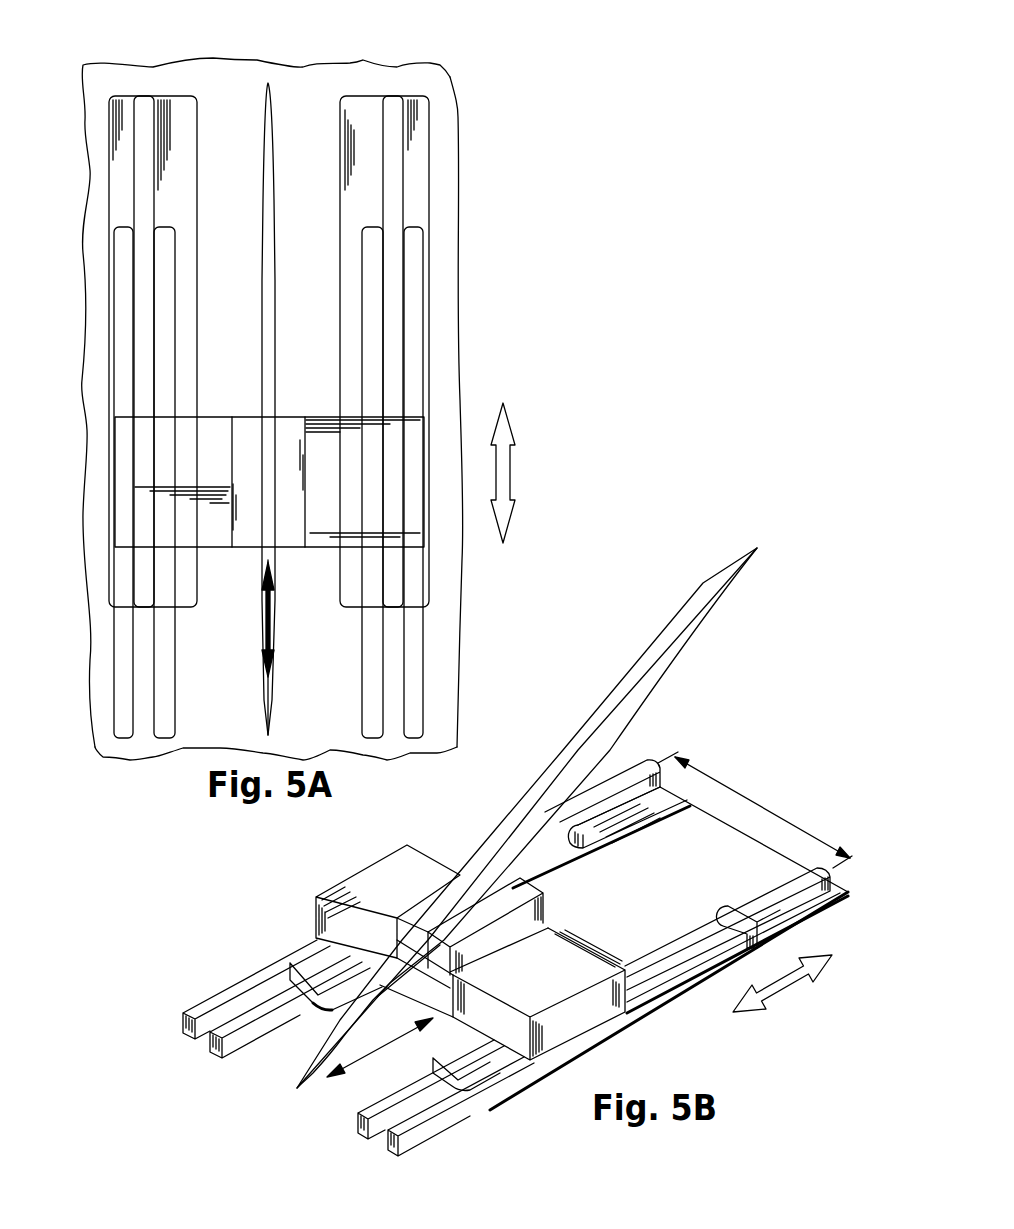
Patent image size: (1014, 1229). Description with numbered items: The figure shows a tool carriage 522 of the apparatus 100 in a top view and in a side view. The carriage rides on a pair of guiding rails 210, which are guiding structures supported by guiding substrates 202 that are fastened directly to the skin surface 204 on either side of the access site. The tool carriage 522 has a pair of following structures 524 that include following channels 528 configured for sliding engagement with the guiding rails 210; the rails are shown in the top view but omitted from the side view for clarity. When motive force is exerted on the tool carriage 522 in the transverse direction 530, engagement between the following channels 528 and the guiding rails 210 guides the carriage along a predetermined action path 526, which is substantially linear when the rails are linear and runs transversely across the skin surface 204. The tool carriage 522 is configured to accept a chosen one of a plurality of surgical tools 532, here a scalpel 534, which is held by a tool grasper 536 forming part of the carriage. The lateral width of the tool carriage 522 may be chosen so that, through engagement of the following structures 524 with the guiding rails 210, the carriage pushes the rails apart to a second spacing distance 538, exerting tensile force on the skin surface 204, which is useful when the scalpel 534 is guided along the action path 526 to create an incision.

In FIG. 5A, the apparatus 100 is at (500, 76).
In FIG. 5B, the apparatus 100 is at (790, 548).
In FIG. 5A, the guiding substrate 202 is at (123, 208).
In FIG. 5B, the guiding substrate 202 is at (535, 939).
In FIG. 5A, the skin surface 204 is at (442, 383).
In FIG. 5A, the guiding rail 210 is at (145, 188).
In FIG. 5A, the tool carriage 522 is at (475, 134).
In FIG. 5B, the tool carriage 522 is at (700, 1035).
In FIG. 5A, the following structure 524 is at (430, 697).
In FIG. 5B, the following structure 524 is at (470, 1125).
In FIG. 5A, the action path 526 is at (270, 638).
In FIG. 5B, the action path 526 is at (362, 1062).
In FIG. 5A, the following channel 528 is at (145, 657).
In FIG. 5B, the following channel 528 is at (203, 1033).
In FIG. 5A, the transverse direction 530 is at (510, 473).
In FIG. 5B, the transverse direction 530 is at (792, 983).
In FIG. 5A, the surgical tool 532 is at (266, 120).
In FIG. 5B, the surgical tool 532 is at (689, 560).
In FIG. 5A, the scalpel 534 is at (272, 135).
In FIG. 5B, the scalpel 534 is at (617, 721).
In FIG. 5A, the tool grasper 536 is at (248, 480).
In FIG. 5B, the tool grasper 536 is at (530, 905).
In FIG. 5B, the second spacing distance 538 is at (743, 793).